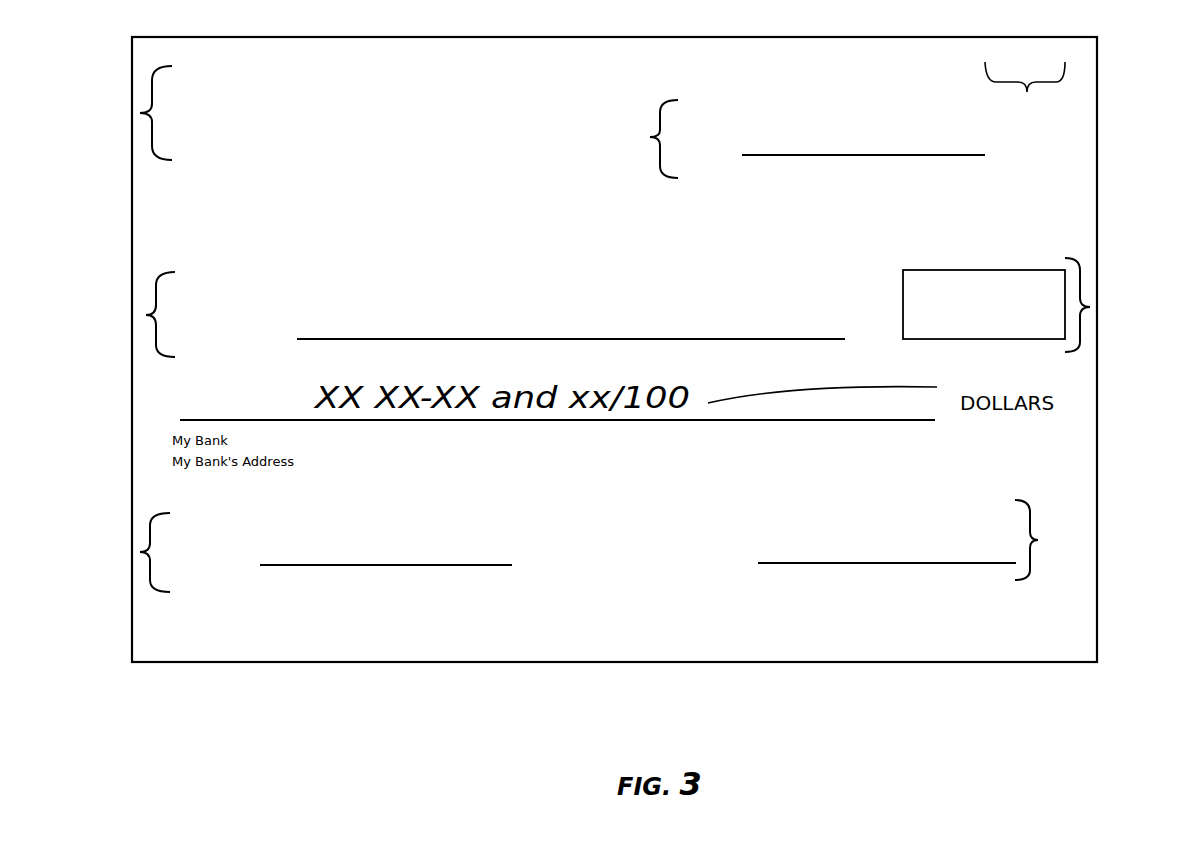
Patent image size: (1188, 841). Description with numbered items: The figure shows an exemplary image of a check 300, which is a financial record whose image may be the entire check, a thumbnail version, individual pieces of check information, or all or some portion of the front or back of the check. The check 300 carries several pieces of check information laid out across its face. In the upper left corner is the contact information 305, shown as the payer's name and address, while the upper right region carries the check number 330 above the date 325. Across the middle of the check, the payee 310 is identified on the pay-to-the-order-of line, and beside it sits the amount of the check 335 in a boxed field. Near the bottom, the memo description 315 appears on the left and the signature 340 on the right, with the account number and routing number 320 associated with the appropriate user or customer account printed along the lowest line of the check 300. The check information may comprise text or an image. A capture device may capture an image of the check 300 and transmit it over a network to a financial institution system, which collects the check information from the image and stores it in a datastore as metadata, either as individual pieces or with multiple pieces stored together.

The check 300 is at (998, 625).
The contact information 305 is at (140, 113).
The payee 310 is at (146, 315).
The memo description 315 is at (140, 552).
The account number and routing number 320 is at (692, 674).
The date 325 is at (650, 137).
The check number 330 is at (1025, 89).
The amount of the check 335 is at (1090, 307).
The signature 340 is at (1038, 540).